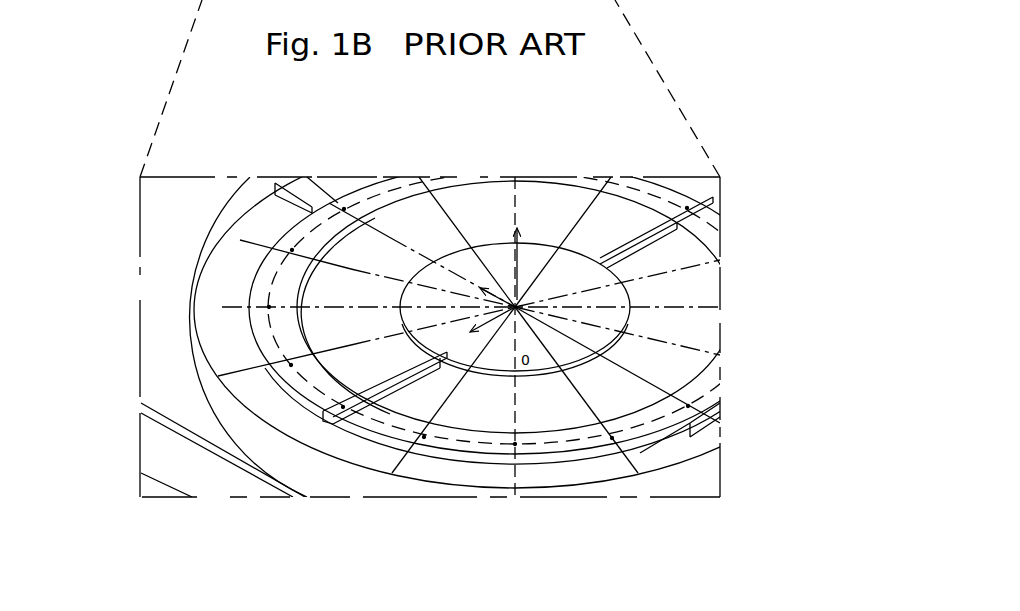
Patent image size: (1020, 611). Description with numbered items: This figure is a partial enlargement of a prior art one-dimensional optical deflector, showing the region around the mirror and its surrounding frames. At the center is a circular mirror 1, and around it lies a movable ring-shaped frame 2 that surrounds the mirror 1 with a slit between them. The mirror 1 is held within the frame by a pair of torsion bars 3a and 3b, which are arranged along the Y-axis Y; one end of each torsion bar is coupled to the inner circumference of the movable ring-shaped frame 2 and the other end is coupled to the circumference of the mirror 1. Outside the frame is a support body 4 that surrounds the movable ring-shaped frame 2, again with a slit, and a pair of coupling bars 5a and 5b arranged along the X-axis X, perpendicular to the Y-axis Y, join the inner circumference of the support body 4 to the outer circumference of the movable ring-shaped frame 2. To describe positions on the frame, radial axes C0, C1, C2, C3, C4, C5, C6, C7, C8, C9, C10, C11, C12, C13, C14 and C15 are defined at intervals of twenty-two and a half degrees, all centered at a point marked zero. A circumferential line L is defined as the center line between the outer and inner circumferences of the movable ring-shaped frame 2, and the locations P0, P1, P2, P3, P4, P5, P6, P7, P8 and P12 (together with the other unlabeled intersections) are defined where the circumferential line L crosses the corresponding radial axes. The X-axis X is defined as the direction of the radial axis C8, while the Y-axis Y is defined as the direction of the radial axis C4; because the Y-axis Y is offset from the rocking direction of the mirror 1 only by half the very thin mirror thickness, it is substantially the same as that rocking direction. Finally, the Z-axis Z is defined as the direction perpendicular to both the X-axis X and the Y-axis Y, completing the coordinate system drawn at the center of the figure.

The circular mirror 1 is at (705, 300).
The movable ring-shaped frame 2 is at (470, 452).
The torsion bar 3a is at (634, 236).
The torsion bar 3b is at (340, 427).
The support body 4 is at (143, 426).
The coupling bar 5a is at (715, 422).
The coupling bar 5b is at (303, 192).
The circumferential line L is at (560, 450).
The location P0 is at (690, 403).
The location P1 is at (614, 441).
The location P2 is at (516, 448).
The location P3 is at (425, 441).
The location P4 is at (344, 411).
The location P5 is at (290, 368).
The location P6 is at (267, 306).
The location P7 is at (293, 248).
The location P8 is at (346, 211).
The location P12 is at (689, 211).
The radial axis C0 is at (640, 373).
The radial axis C1 is at (577, 397).
The radial axis C2 is at (520, 403).
The radial axis C3 is at (466, 392).
The radial axis C4 is at (418, 373).
The radial axis C5 is at (378, 345).
The radial axis C6 is at (357, 307).
The radial axis C7 is at (373, 267).
The radial axis C8 is at (405, 238).
The radial axis C9 is at (460, 233).
The radial axis C10 is at (512, 217).
The radial axis C11 is at (557, 233).
The radial axis C12 is at (600, 258).
The radial axis C13 is at (636, 272).
The radial axis C14 is at (643, 303).
The radial axis C15 is at (642, 338).
The X-axis X is at (497, 281).
The Y-axis Y is at (492, 333).
The Z-axis Z is at (524, 253).